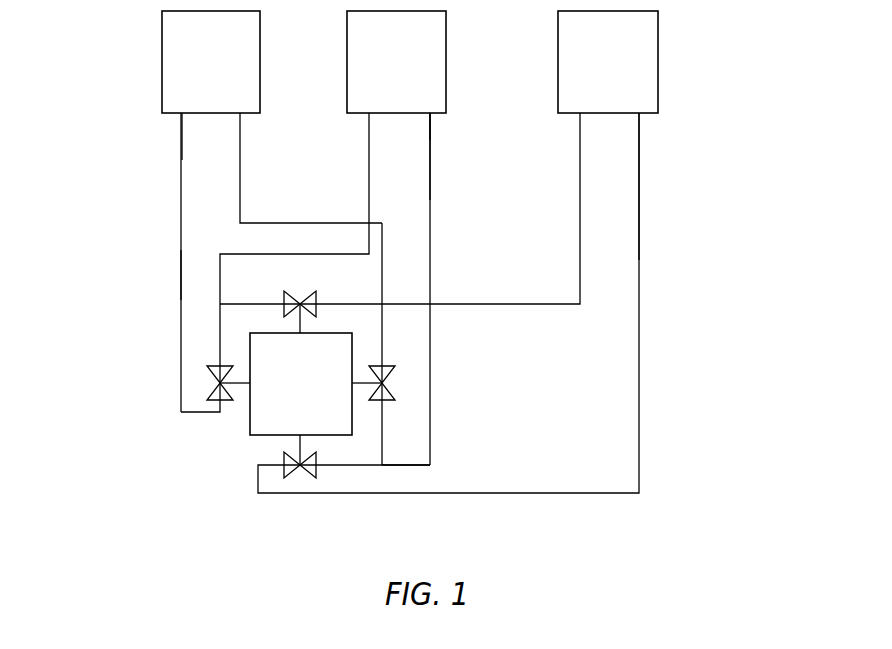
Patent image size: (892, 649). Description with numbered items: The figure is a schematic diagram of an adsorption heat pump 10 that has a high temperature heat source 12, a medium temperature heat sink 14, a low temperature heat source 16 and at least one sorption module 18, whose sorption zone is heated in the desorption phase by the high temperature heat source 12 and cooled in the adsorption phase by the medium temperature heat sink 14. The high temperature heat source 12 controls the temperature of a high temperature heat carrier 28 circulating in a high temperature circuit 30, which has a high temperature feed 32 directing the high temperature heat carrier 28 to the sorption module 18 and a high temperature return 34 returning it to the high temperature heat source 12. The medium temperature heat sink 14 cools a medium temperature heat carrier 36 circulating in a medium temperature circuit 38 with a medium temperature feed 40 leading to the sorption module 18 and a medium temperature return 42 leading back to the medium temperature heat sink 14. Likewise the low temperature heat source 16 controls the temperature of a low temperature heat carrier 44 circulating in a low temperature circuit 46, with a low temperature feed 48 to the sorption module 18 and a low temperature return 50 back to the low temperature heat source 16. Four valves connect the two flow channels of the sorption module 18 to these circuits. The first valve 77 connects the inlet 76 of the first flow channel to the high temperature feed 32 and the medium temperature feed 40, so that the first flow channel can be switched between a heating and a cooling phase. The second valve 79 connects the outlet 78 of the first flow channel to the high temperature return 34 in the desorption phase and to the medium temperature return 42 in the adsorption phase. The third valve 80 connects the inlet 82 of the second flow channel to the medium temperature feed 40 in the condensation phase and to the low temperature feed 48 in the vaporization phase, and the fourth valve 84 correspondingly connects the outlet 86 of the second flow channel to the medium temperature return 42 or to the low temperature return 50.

The adsorption heat pump 10 is at (683, 127).
The high temperature heat source 12 is at (197, 79).
The medium temperature heat sink 14 is at (382, 79).
The low temperature heat source 16 is at (594, 79).
The sorption module 18 is at (293, 401).
The high temperature heat carrier 28 is at (181, 274).
The high temperature circuit 30 is at (167, 145).
The high temperature feed 32 is at (181, 188).
The high temperature return 34 is at (240, 125).
The medium temperature heat carrier 36 is at (432, 223).
The medium temperature circuit 38 is at (458, 127).
The medium temperature feed 40 is at (369, 165).
The medium temperature return 42 is at (430, 148).
The low temperature heat carrier 44 is at (643, 334).
The low temperature circuit 46 is at (662, 165).
The low temperature feed 48 is at (580, 188).
The low temperature return 50 is at (639, 214).
The inlet of the first flow channel 76 is at (243, 387).
The first valve 77 is at (207, 367).
The outlet of the first flow channel 78 is at (362, 387).
The second valve 79 is at (392, 390).
The third valve 80 is at (300, 304).
The inlet of the second flow channel 82 is at (302, 308).
The fourth valve 84 is at (310, 478).
The outlet of the second flow channel 86 is at (300, 440).